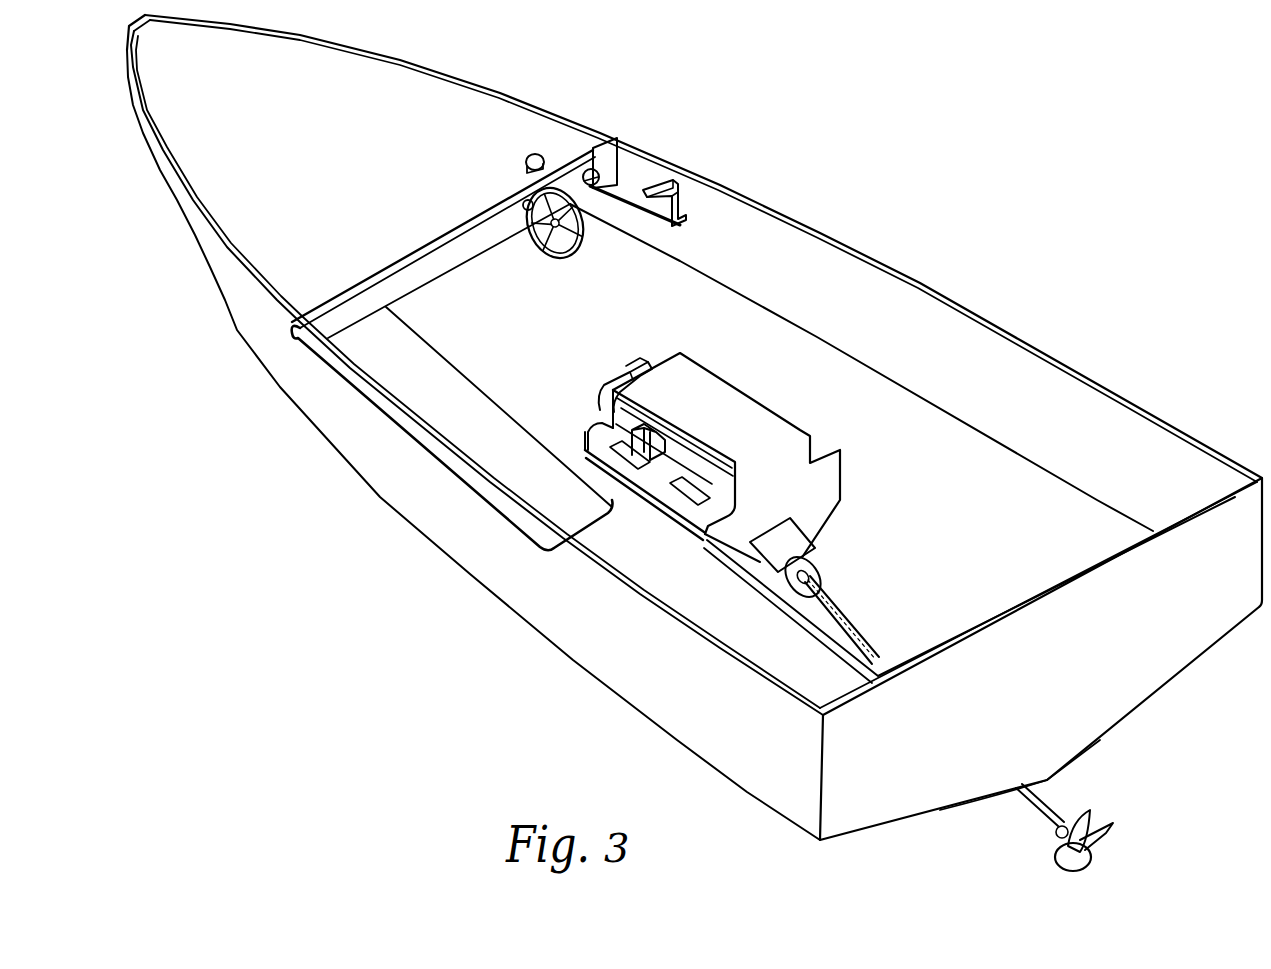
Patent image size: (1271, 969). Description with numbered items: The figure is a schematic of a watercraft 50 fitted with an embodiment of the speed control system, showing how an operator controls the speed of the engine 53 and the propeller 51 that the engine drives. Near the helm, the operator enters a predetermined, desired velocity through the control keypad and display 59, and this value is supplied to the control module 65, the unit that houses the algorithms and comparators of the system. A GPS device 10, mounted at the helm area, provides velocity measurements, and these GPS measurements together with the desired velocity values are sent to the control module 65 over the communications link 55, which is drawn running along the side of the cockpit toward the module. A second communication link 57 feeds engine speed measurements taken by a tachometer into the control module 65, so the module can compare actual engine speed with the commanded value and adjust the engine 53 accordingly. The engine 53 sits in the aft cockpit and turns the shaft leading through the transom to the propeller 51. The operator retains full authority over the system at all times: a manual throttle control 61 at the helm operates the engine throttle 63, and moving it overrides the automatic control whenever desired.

The GPS device 10 is at (533, 152).
The watercraft 50 is at (447, 627).
The propeller 51 is at (1050, 853).
The engine 53 is at (789, 508).
The communications link 55 is at (456, 478).
The communication link 57 is at (590, 430).
The control keypad and display 59 is at (599, 172).
The manual throttle control 61 is at (658, 183).
The engine throttle 63 is at (632, 362).
The control module 65 is at (652, 438).